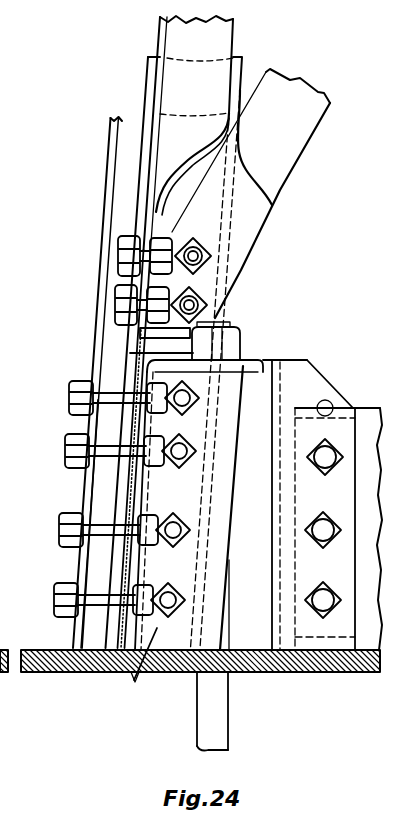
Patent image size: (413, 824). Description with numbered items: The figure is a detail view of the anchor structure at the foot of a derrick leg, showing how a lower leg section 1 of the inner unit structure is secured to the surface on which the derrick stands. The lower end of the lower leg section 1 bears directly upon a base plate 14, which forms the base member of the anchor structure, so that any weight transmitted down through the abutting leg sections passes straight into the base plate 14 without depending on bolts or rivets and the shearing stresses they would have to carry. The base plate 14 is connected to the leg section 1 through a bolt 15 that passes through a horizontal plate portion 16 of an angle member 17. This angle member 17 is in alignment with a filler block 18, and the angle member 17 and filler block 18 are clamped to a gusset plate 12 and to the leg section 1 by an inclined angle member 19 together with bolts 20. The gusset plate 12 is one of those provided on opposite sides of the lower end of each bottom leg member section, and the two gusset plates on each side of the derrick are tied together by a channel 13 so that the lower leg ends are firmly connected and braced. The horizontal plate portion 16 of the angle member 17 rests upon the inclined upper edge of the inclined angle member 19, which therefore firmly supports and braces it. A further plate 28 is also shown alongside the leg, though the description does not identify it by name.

The lower leg section 1 is at (237, 70).
The gusset plate 12 is at (307, 382).
The channel 13 is at (368, 408).
The base plate 14 is at (33, 673).
The bolt 15 is at (218, 718).
The horizontal plate portion 16 is at (257, 358).
The angle member 17 is at (132, 372).
The filler block 18 is at (82, 562).
The inclined angle member 19 is at (235, 375).
The bolt 20 is at (67, 440).
The plate 28 is at (110, 144).